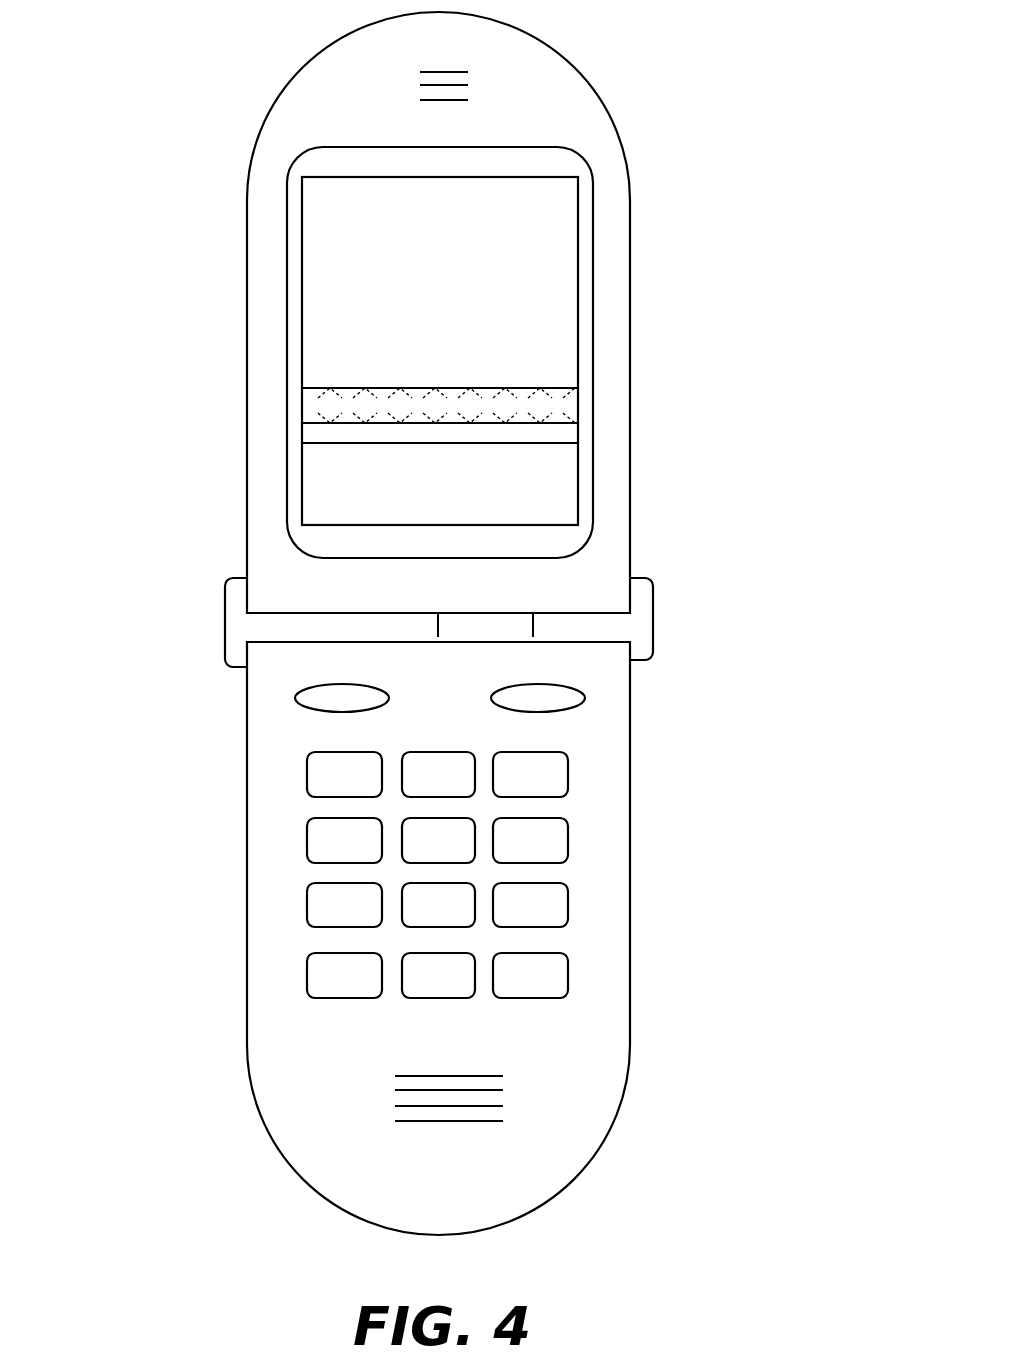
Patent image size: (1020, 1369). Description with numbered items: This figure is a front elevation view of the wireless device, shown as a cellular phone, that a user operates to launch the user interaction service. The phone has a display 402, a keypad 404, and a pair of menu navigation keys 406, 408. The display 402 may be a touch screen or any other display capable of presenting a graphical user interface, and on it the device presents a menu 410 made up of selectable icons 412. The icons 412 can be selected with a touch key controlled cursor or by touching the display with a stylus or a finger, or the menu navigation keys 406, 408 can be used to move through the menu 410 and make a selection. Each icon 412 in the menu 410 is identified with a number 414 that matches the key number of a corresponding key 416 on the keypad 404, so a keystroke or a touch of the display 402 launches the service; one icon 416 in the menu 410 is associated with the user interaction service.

The display 402 is at (552, 288).
The keypad 404 is at (606, 790).
The menu navigation key 406 is at (295, 703).
The menu navigation key 408 is at (585, 698).
The menu 410 is at (556, 203).
The selectable icons 412 is at (302, 363).
The number 414 is at (305, 408).
The key 416 is at (576, 405).